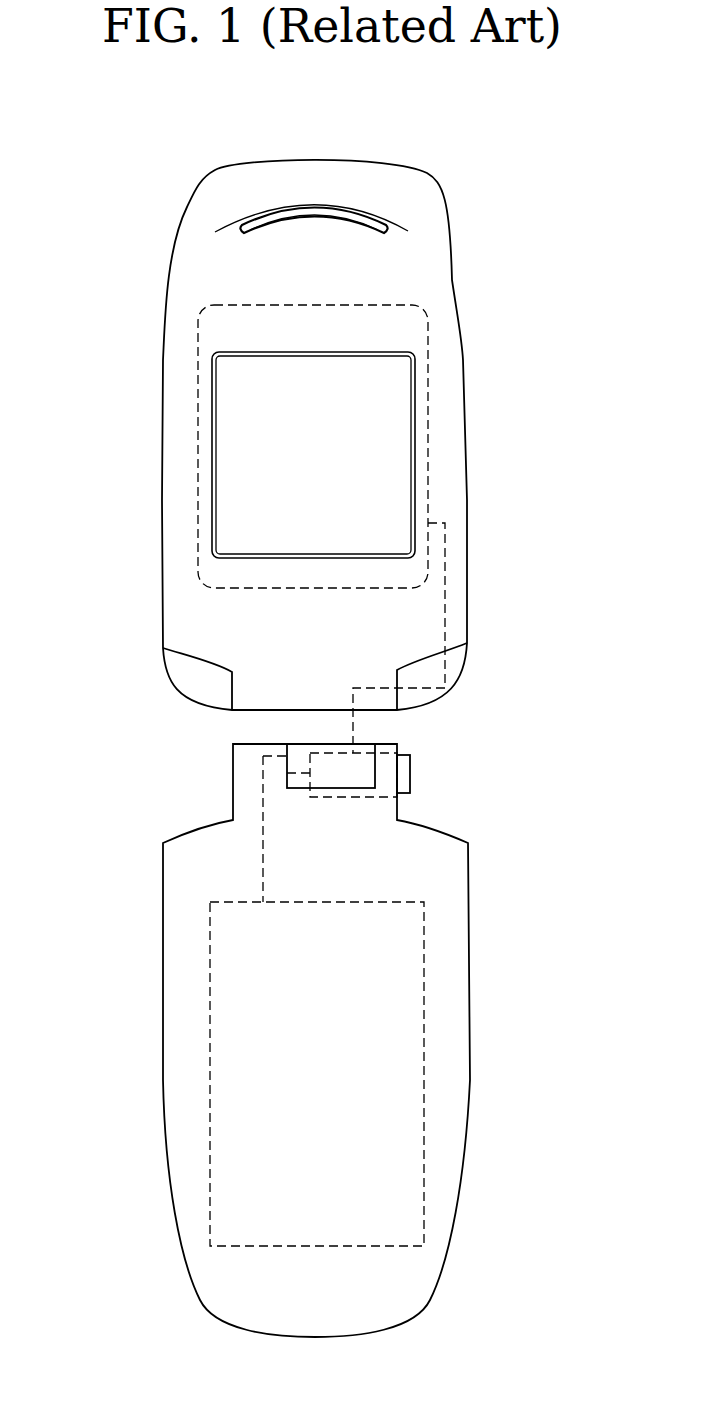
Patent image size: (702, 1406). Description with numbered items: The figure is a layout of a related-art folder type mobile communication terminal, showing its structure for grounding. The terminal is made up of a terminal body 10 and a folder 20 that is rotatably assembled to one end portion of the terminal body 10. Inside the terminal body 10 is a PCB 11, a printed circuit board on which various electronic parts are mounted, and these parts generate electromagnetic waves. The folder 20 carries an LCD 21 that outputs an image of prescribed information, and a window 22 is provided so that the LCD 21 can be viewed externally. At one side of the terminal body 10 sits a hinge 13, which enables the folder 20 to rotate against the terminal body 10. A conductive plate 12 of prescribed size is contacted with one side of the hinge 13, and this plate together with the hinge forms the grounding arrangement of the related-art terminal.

The terminal body 10 is at (474, 933).
The PCB (printed circuit board) 11 is at (210, 1003).
The conductive plate 12 is at (362, 761).
The hinge 13 is at (412, 775).
The folder 20 is at (466, 325).
The LCD (liquid crystal display) 21 is at (433, 483).
The window 22 is at (233, 455).